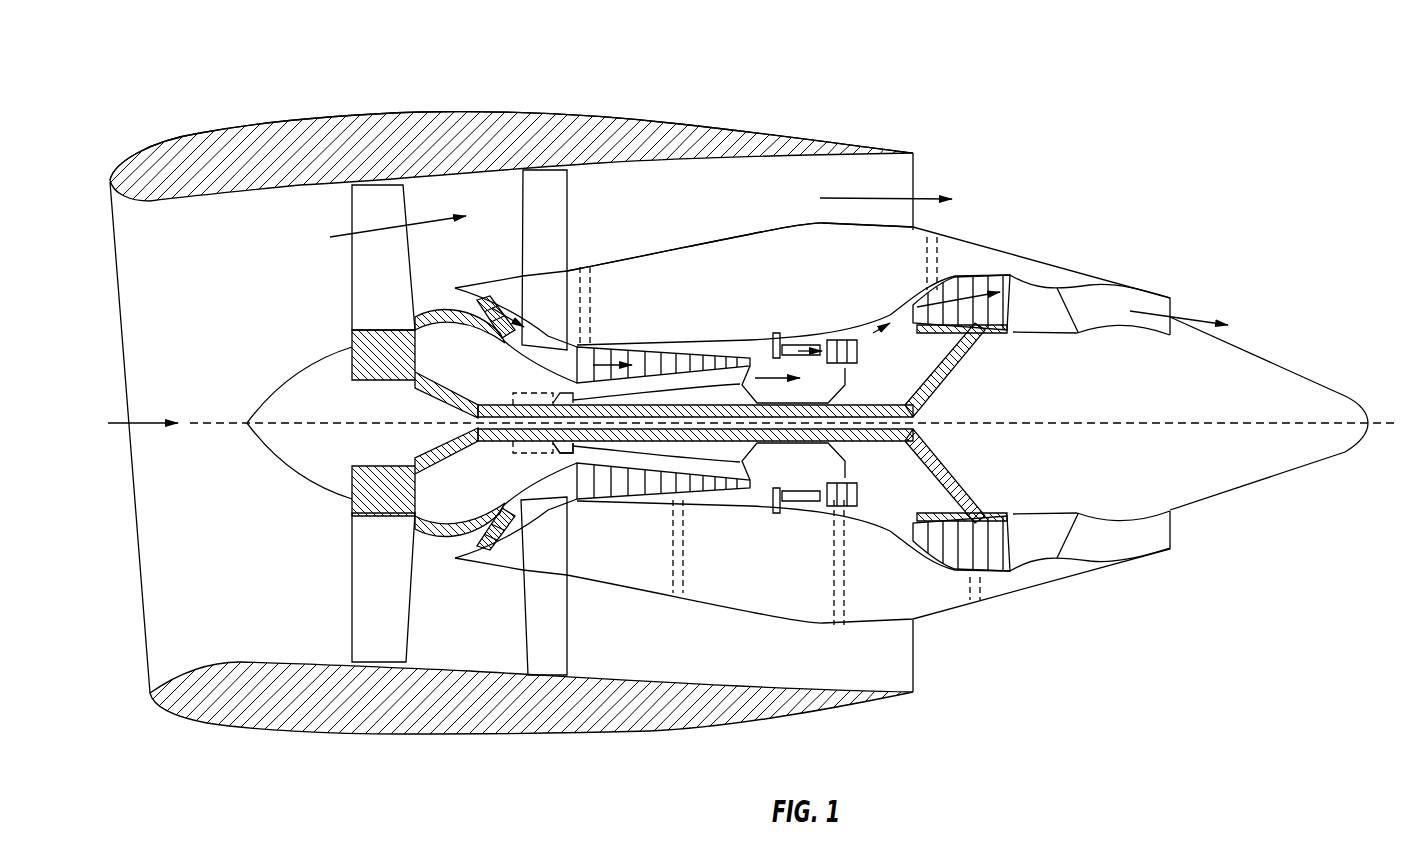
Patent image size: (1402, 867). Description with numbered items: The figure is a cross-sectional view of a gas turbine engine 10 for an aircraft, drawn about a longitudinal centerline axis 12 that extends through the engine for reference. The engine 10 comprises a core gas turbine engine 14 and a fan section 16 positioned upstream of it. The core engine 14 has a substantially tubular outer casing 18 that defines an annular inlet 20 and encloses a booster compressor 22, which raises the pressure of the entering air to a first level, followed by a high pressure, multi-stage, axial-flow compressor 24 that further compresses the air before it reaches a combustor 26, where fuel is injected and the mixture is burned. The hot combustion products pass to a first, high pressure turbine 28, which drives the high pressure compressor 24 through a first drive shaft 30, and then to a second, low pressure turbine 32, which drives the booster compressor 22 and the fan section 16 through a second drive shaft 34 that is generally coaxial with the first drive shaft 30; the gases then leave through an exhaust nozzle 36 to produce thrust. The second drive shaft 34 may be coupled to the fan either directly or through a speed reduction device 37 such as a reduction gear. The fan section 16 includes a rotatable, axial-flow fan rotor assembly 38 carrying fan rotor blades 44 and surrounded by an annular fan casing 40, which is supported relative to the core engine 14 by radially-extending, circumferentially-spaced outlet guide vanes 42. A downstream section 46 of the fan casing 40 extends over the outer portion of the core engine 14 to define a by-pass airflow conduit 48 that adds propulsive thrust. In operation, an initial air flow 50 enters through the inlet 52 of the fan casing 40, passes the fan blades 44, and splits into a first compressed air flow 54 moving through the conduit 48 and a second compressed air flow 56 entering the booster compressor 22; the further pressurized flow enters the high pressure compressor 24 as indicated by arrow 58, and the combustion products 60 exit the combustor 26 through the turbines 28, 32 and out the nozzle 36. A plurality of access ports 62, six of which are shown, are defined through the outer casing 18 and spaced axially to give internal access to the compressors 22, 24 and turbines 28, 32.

The gas turbine engine 10 is at (1074, 120).
The longitudinal centerline axis 12 is at (1115, 421).
The core gas turbine engine 14 is at (754, 290).
The fan section 16 is at (404, 102).
The outer casing 18 is at (740, 610).
The annular inlet 20 is at (468, 547).
The booster compressor 22 is at (533, 505).
The high pressure compressor 24 is at (600, 492).
The combustor 26 is at (787, 518).
The first turbine 28 is at (868, 503).
The first drive shaft 30 is at (805, 385).
The second turbine 32 is at (1010, 570).
The second drive shaft 34 is at (535, 402).
The exhaust nozzle 36 is at (1170, 307).
The speed reduction device 37 is at (531, 487).
The fan rotor assembly 38 is at (410, 378).
The fan casing 40 is at (400, 735).
The outlet guide vanes 42 is at (568, 198).
The fan rotor blades 44 is at (352, 608).
The downstream section 46 is at (793, 134).
The by-pass airflow conduit 48 is at (720, 201).
The initial air flow 50 is at (143, 422).
The inlet 52 is at (145, 655).
The first compressed air flow 54 is at (368, 223).
The second compressed air flow 56 is at (437, 302).
The air flow into high pressure compressor 58 is at (593, 347).
The combustion products 60 is at (848, 343).
The access ports 62 is at (594, 285).